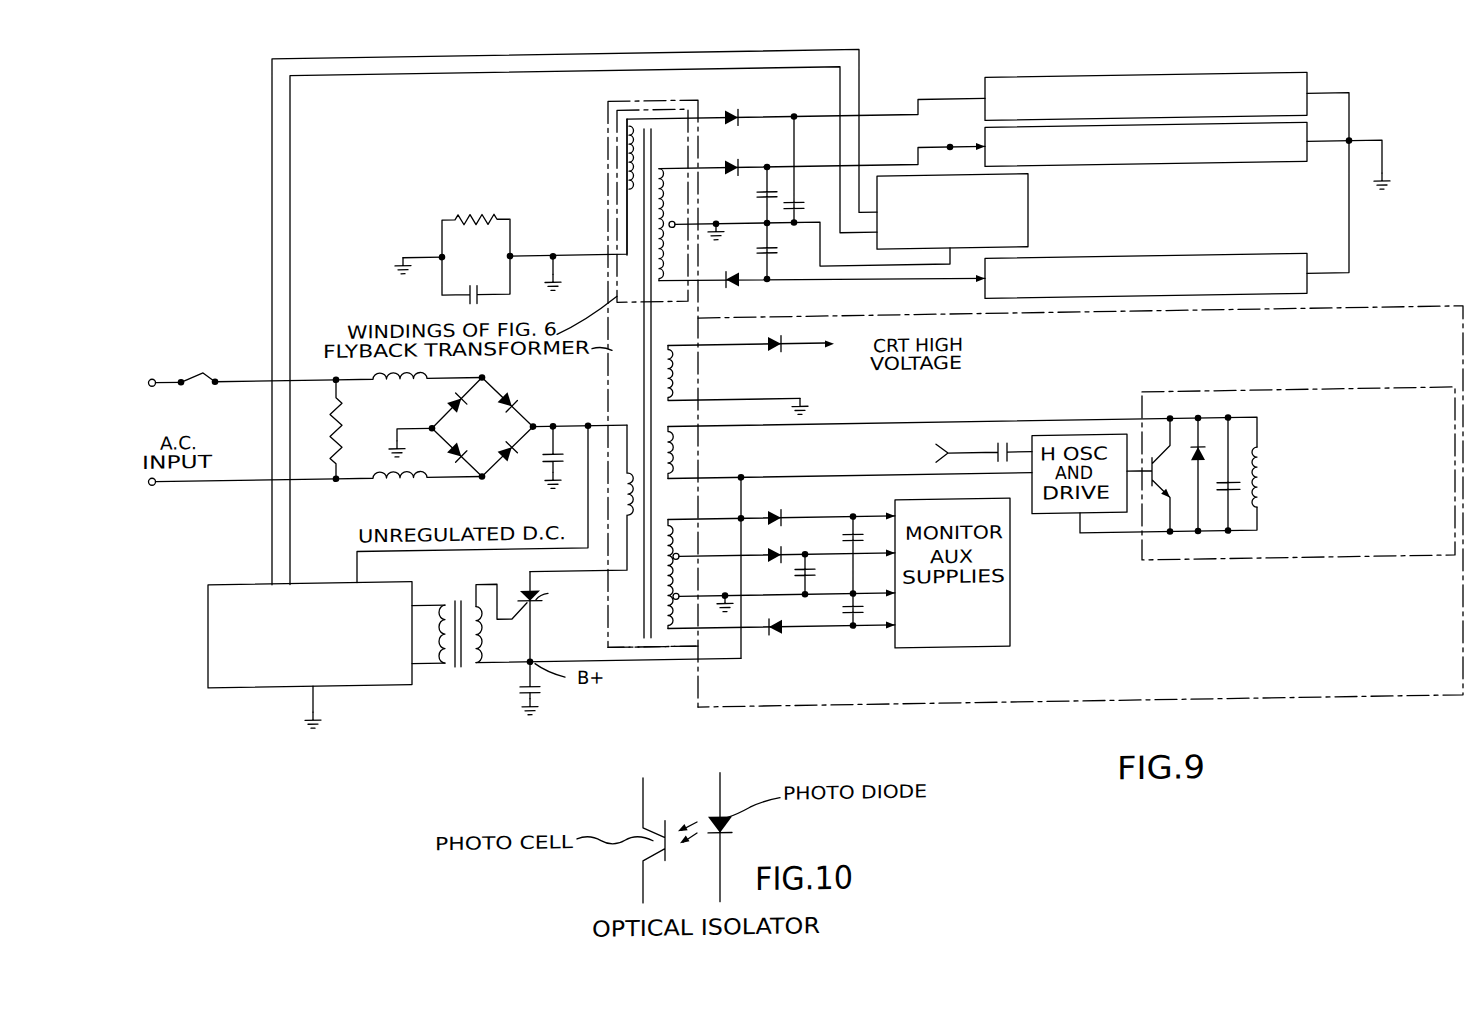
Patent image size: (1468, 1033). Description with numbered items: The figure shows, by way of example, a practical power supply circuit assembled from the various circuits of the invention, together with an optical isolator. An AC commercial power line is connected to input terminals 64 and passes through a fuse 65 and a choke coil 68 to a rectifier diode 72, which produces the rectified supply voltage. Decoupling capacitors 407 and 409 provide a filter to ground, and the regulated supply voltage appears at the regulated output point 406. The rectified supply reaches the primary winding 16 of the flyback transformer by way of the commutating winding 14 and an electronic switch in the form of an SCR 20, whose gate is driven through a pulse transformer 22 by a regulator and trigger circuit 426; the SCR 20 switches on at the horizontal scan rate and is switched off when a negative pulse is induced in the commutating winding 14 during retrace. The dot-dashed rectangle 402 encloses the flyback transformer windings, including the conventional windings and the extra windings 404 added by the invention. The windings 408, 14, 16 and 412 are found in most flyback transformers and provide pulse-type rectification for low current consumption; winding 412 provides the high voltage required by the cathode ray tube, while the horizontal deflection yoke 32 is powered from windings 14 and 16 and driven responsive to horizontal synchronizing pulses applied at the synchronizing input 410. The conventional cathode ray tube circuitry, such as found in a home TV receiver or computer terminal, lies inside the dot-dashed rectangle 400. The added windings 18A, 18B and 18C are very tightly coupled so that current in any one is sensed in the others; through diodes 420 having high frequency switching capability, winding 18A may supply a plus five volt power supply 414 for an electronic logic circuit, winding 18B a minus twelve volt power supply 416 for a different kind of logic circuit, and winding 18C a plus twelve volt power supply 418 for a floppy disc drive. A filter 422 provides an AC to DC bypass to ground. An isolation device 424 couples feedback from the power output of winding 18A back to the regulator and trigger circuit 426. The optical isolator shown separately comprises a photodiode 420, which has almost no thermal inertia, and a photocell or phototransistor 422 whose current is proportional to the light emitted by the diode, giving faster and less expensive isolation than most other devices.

In FIG. 9, the input terminals 64 is at (152, 368).
In FIG. 9, the fuse 65 is at (204, 368).
In FIG. 9, the choke coil 68 is at (375, 407).
In FIG. 9, the rectifier diode 72 is at (470, 436).
In FIG. 9, the decoupling capacitor 407 is at (543, 453).
In FIG. 9, the commutating winding 14 is at (626, 499).
In FIG. 9, the pulse transformer 22 is at (443, 584).
In FIG. 9, the SCR 20 is at (560, 623).
In FIG. 9, the dot-dashed rectangle 402 is at (610, 635).
In FIG. 9, the decoupling capacitor 409 is at (520, 687).
In FIG. 9, the regulated B+ voltage point 406 is at (556, 711).
In FIG. 9, the regulator and trigger circuit 426 is at (367, 686).
In FIG. 9, the filter 422 is at (462, 259).
In FIG. 10, the filter 422 is at (665, 820).
In FIG. 9, the extra windings 404 is at (617, 237).
In FIG. 9, the power supply winding 18C is at (629, 148).
In FIG. 9, the power supply winding 18A is at (671, 200).
In FIG. 9, the power supply winding 18B is at (671, 252).
In FIG. 9, the diodes 420 is at (728, 106).
In FIG. 10, the diodes 420 is at (728, 827).
In FIG. 9, the isolation device 424 is at (1030, 209).
In FIG. 9, the floppy disc drive power supply 418 is at (1105, 83).
In FIG. 9, the electronic logic circuit power supply 414 is at (1173, 172).
In FIG. 9, the logic circuit power supply 416 is at (1125, 264).
In FIG. 9, the high voltage winding 412 is at (680, 380).
In FIG. 9, the primary winding 16 is at (680, 458).
In FIG. 9, the horizontal synchronizing pulse input 410 is at (946, 450).
In FIG. 9, the flyback transformer winding 408 is at (668, 650).
In FIG. 9, the dot-dashed rectangle 400 is at (1270, 708).
In FIG. 9, the horizontal deflection yoke 32 is at (1398, 492).